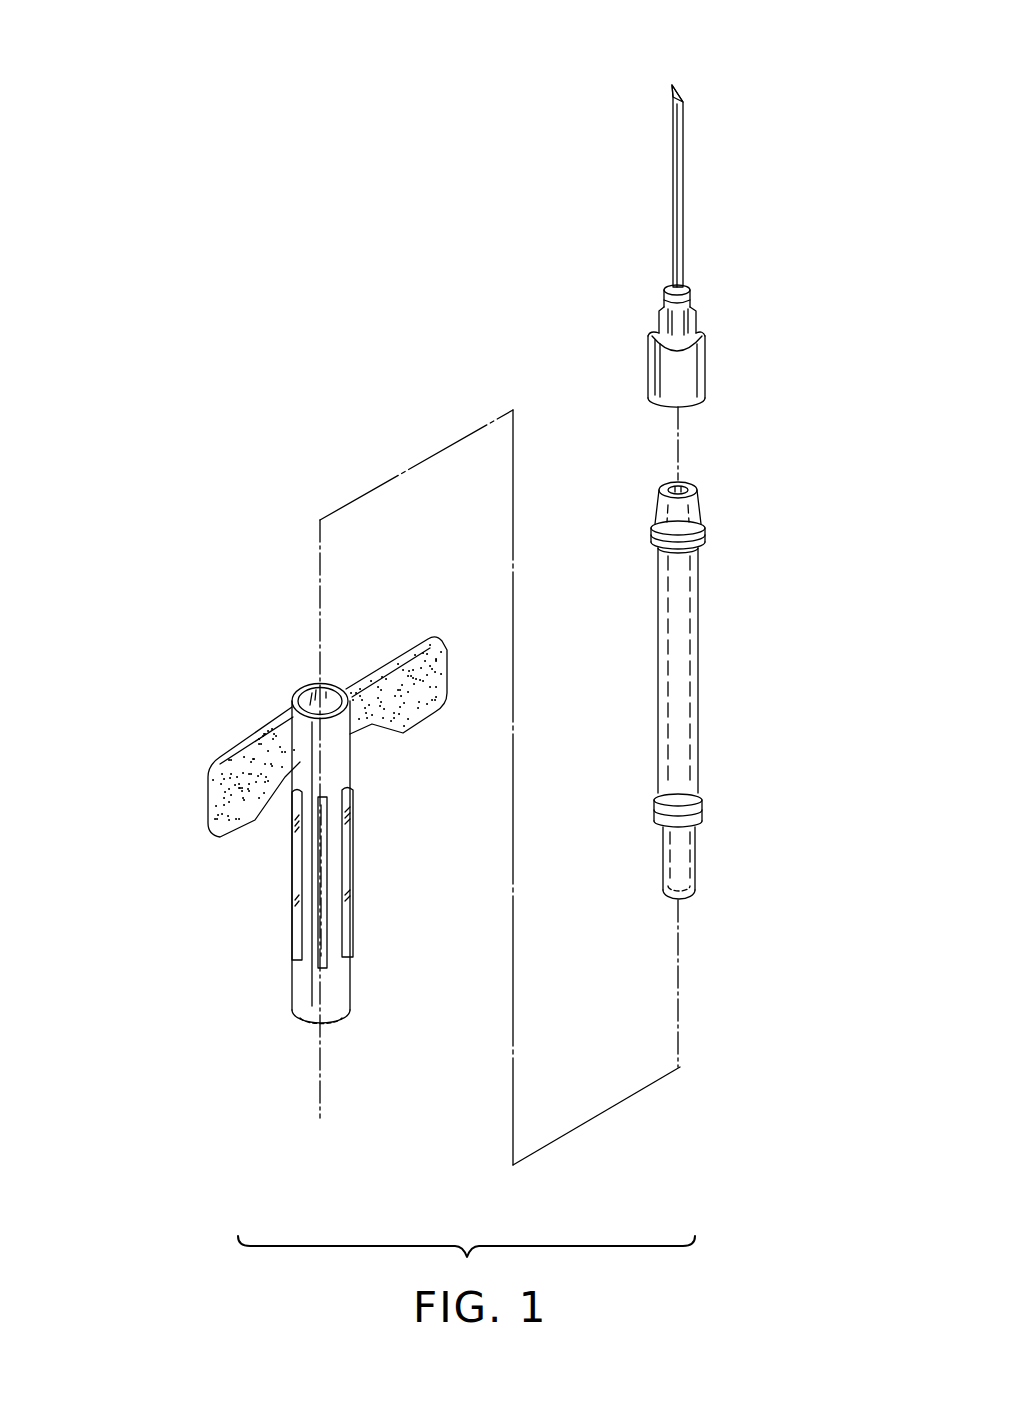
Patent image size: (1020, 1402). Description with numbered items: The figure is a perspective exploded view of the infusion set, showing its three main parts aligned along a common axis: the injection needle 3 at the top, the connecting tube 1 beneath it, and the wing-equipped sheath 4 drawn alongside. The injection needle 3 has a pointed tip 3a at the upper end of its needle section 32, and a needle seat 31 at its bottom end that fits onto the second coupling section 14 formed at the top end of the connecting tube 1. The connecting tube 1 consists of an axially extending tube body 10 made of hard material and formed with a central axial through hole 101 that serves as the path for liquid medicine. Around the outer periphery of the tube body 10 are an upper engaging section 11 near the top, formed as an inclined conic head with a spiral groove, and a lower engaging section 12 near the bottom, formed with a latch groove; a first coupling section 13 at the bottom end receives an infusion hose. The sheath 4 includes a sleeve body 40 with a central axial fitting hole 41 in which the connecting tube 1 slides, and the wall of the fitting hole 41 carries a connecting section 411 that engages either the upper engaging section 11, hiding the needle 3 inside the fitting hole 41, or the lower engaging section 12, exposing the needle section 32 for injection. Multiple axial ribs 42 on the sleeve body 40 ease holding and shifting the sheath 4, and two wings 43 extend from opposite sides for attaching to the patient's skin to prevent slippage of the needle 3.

The connecting tube 1 is at (697, 662).
The tube body 10 is at (683, 705).
The central axial through hole 101 is at (687, 480).
The upper engaging section 11 is at (700, 538).
The lower engaging section 12 is at (702, 815).
The first coupling section 13 is at (684, 877).
The second coupling section 14 is at (697, 469).
The injection needle 3 is at (690, 211).
The needle tip 3a is at (673, 84).
The needle seat 31 is at (698, 296).
The needle section 32 is at (677, 207).
The wing-equipped sheath 4 is at (275, 814).
The sleeve body 40 is at (307, 973).
The fitting hole 41 is at (313, 701).
The connecting section 411 is at (313, 1025).
The axial ribs 42 is at (348, 860).
The wings 43 is at (238, 770).